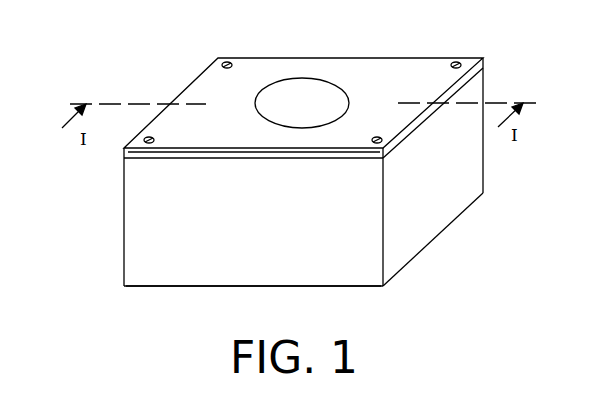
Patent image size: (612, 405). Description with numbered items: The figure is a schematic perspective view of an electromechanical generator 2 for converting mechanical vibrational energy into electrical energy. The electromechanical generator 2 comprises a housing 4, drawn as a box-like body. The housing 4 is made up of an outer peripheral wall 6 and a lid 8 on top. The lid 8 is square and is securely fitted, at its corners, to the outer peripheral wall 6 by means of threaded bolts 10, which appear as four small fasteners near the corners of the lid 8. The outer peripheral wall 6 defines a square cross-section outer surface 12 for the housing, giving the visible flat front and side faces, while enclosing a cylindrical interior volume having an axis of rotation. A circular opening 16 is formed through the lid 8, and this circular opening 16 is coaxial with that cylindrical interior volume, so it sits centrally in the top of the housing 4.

The electromechanical generator 2 is at (104, 254).
The housing 4 is at (431, 224).
The outer peripheral wall 6 is at (298, 274).
The lid 8 is at (393, 67).
The threaded bolts 10 is at (226, 62).
The square cross-section outer surface 12 is at (193, 275).
The circular opening 16 is at (318, 86).